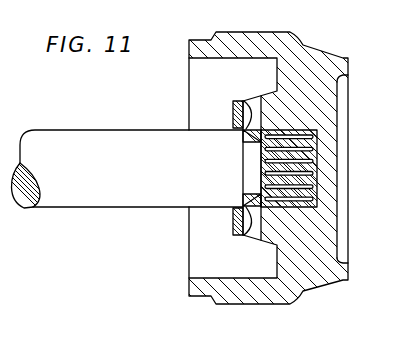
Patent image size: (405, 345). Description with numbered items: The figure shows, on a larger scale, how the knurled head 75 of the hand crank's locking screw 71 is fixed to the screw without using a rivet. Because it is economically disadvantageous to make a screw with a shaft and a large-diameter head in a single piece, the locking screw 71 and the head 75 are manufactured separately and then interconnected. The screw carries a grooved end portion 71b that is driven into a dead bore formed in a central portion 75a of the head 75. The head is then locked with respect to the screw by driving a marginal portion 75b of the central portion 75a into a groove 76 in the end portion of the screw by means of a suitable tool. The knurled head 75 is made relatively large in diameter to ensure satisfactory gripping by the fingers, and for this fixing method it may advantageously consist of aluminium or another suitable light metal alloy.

The locking screw 71 is at (111, 153).
The grooved end portion 71b is at (318, 162).
The knurled head 75 is at (322, 270).
The central portion 75a is at (243, 118).
The marginal portion 75b is at (255, 226).
The groove 76 is at (251, 164).